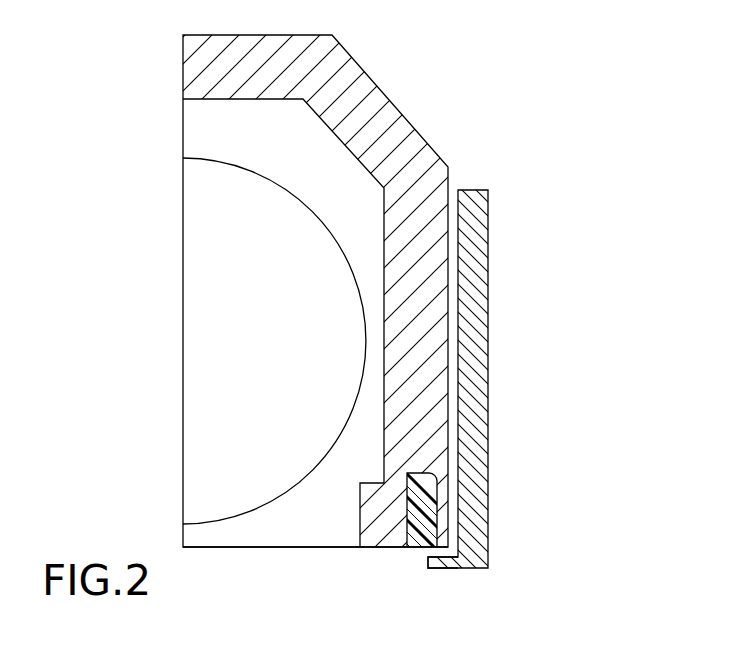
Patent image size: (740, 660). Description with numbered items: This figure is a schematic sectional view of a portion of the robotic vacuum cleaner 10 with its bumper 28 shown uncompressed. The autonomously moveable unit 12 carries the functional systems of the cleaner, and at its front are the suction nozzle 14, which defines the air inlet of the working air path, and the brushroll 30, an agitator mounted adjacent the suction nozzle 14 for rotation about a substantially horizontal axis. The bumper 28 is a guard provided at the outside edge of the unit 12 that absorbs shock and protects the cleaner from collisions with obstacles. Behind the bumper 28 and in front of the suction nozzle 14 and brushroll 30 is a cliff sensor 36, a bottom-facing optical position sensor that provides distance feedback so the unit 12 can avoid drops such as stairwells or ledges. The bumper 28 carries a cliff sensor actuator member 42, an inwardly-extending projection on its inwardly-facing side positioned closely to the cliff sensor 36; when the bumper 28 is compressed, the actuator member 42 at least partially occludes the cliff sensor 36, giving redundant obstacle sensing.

The robotic vacuum cleaner 10 is at (527, 72).
The autonomously moveable housing or unit 12 is at (413, 140).
The suction nozzle 14 is at (270, 547).
The bumper 28 is at (500, 232).
The brushroll 30 is at (207, 327).
The cliff sensor 36 is at (433, 467).
The cliff sensor actuator member 42 is at (435, 568).